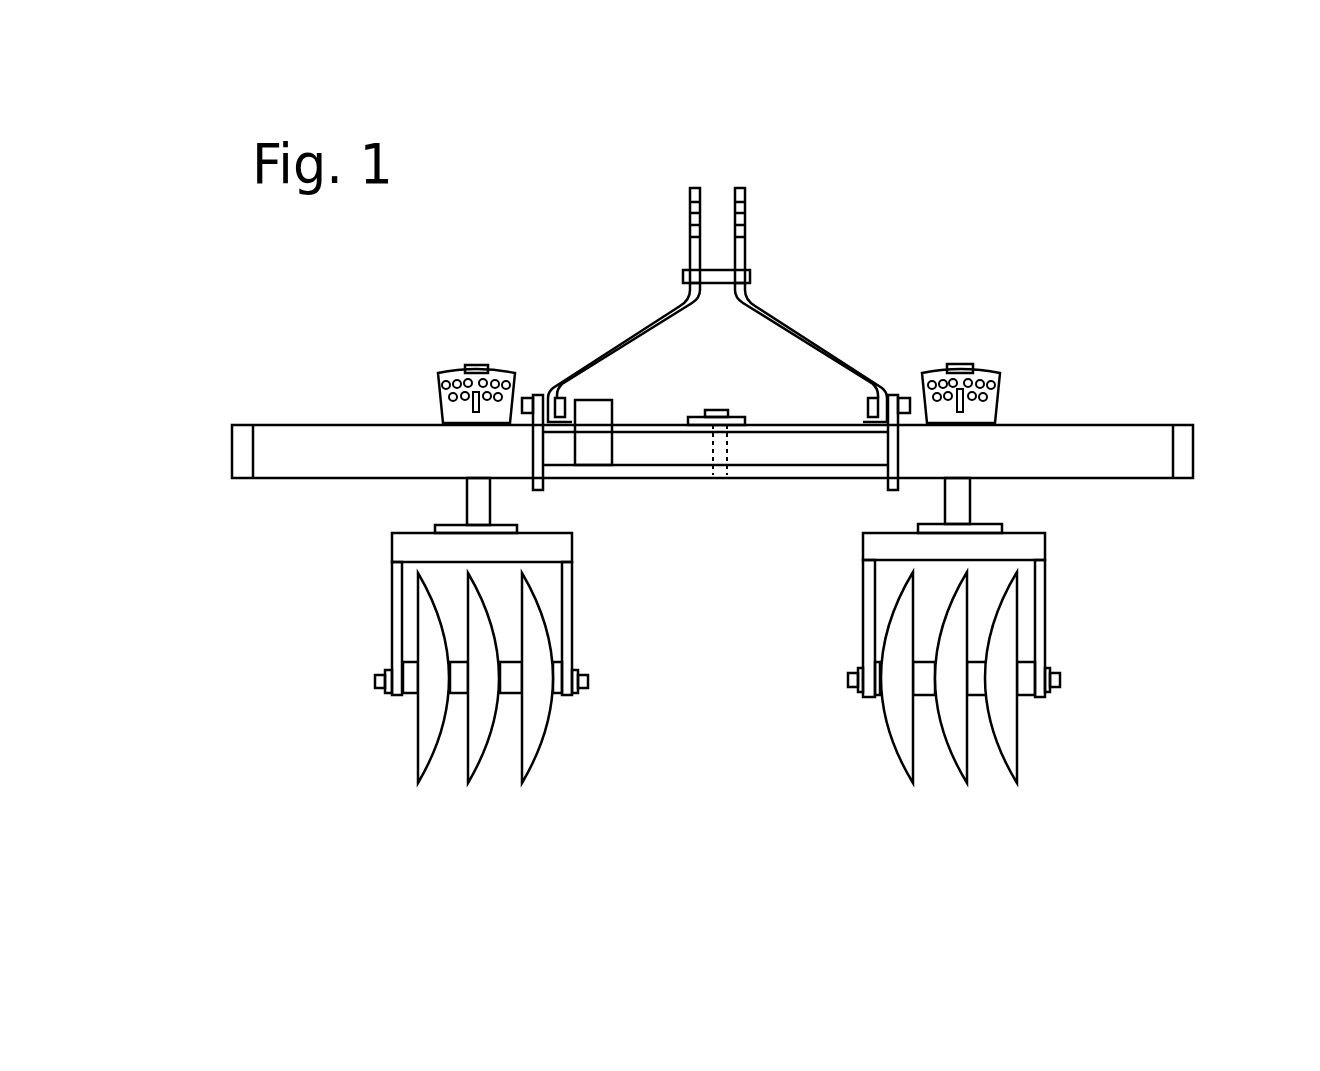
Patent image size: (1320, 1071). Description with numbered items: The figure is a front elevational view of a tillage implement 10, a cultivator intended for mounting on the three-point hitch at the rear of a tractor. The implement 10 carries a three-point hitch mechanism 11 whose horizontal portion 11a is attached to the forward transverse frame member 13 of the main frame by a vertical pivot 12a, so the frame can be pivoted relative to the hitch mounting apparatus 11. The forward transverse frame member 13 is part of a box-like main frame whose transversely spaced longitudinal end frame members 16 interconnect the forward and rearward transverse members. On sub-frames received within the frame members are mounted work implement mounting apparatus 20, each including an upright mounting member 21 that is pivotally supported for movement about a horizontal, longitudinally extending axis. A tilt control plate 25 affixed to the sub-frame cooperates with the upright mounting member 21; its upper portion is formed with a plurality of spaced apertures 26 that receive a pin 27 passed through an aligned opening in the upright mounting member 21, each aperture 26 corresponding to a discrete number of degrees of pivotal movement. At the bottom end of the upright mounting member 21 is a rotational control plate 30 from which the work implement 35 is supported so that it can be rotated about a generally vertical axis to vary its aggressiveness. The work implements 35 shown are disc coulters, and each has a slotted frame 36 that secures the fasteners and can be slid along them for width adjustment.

The tillage implement 10 is at (1003, 170).
The three-point hitch mechanism 11 is at (747, 250).
The horizontal portion 11a is at (788, 423).
The vertical pivot 12a is at (720, 410).
The forward transverse frame member 13 is at (1104, 425).
The longitudinal end frame members 16 is at (1270, 475).
The work implement mounting apparatus 20 is at (478, 342).
The upright mounting member 21 is at (462, 494).
The tilt control plate 25 is at (447, 370).
The apertures 26 is at (432, 392).
The pin 27 is at (470, 408).
The rotational control plate 30 is at (519, 525).
The work implements 35 is at (408, 693).
The slotted frame 36 is at (397, 547).